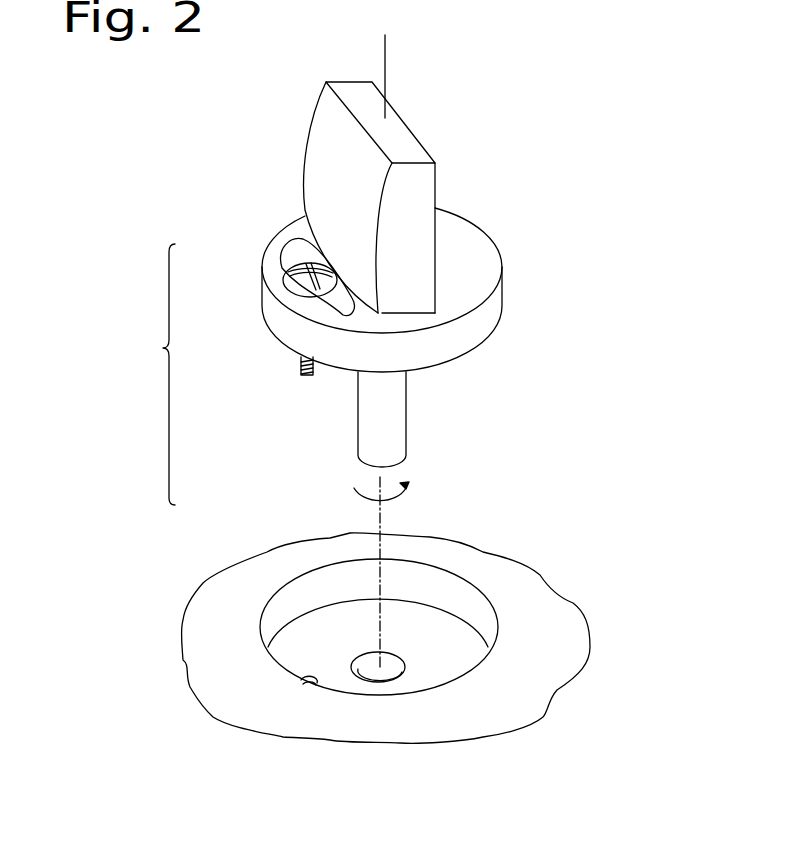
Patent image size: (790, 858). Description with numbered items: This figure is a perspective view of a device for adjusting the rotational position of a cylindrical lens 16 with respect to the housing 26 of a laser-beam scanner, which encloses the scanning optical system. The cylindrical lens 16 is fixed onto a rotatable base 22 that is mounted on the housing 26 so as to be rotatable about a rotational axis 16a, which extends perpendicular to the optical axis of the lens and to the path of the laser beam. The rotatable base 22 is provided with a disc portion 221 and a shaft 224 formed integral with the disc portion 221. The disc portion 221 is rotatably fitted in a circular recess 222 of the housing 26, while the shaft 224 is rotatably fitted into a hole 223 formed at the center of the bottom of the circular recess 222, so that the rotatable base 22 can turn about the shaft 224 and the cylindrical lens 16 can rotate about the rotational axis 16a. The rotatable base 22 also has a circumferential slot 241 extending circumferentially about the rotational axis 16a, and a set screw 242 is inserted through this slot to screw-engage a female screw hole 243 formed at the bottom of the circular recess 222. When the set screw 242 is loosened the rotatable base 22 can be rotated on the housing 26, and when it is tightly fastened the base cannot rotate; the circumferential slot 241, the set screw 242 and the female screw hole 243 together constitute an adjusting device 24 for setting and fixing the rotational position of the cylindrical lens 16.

The cylindrical lens 16 is at (415, 148).
The rotational axis 16a is at (388, 68).
The rotatable base 22 is at (392, 333).
The disc portion 221 is at (477, 275).
The circular recess 222 is at (460, 597).
The hole 223 is at (405, 670).
The shaft 224 is at (395, 440).
The adjusting device 24 is at (150, 374).
The circumferential slot 241 is at (338, 322).
The set screw 242 is at (293, 282).
The female screw hole 243 is at (308, 672).
The housing 26 is at (568, 645).